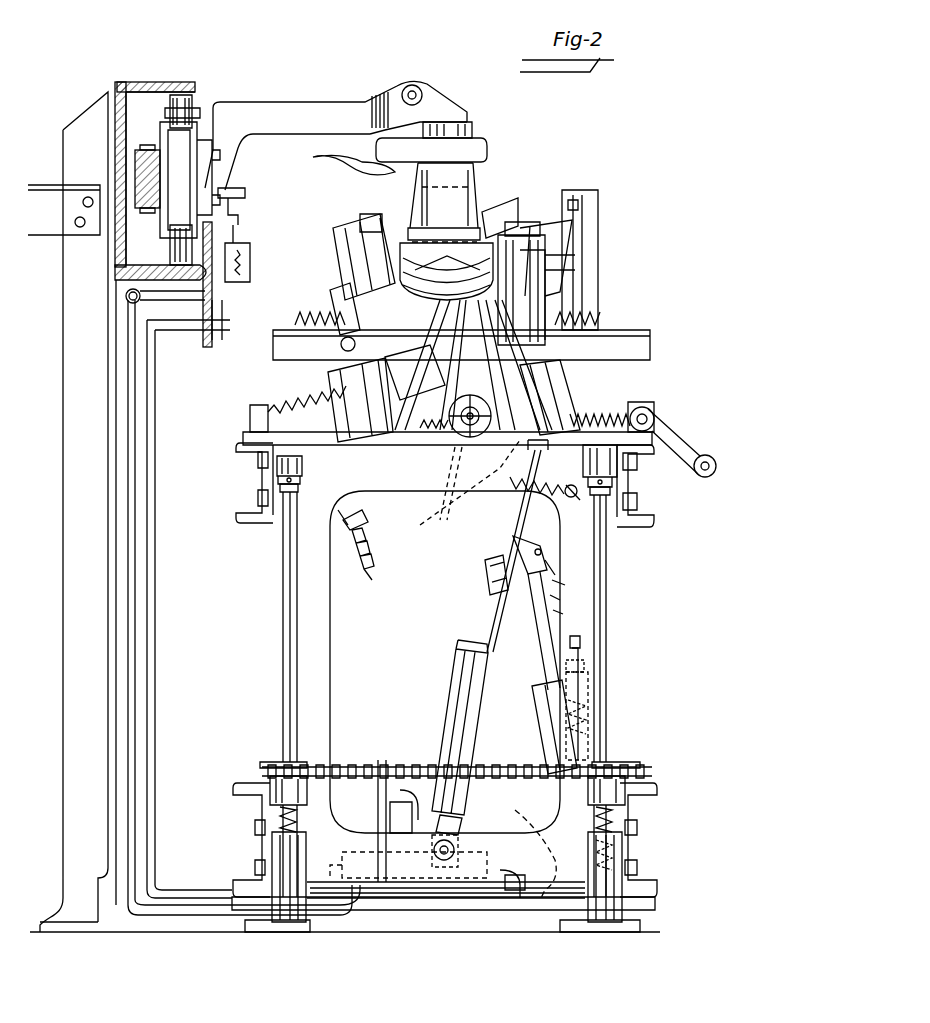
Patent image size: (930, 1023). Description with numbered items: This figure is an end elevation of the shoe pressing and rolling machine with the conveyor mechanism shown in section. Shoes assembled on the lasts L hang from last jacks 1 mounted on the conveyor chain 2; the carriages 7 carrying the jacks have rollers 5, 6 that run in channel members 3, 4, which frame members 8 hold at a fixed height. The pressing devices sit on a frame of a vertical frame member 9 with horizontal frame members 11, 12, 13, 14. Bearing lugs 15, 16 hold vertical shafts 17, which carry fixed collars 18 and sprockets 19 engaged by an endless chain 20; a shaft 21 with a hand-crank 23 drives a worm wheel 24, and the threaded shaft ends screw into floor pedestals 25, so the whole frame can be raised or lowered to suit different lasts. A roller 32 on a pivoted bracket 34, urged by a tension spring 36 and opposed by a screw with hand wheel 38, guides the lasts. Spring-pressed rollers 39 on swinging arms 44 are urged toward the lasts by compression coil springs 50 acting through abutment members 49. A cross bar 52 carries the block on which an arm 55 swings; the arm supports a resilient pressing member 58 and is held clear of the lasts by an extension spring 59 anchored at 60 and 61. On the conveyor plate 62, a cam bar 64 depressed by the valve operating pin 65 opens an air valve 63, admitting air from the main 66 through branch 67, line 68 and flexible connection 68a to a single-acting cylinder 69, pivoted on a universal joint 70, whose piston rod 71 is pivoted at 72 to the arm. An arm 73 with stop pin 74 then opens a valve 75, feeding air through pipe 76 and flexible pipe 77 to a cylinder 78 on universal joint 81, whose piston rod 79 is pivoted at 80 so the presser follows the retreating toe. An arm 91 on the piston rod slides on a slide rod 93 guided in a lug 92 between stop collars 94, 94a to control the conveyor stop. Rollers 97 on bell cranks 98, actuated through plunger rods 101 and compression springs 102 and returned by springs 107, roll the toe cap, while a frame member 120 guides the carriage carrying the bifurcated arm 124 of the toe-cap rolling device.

The last jack 1 is at (296, 102).
The conveyor chain 2 is at (135, 170).
The channel member 3 is at (190, 95).
The channel member 4 is at (178, 262).
The roller 5 is at (197, 112).
The roller 6 is at (168, 240).
The carriage 7 is at (178, 215).
The frame member 8 is at (75, 318).
The vertical frame member 9 is at (585, 630).
The horizontal frame member 11 is at (270, 472).
The horizontal frame member 12 is at (630, 490).
The horizontal frame member 13 is at (262, 840).
The horizontal frame member 14 is at (622, 836).
The bearing lug 15 is at (304, 472).
The bearing lug 16 is at (270, 790).
The vertical shaft 17 is at (290, 615).
The fixed collar 18 is at (300, 480).
The sprocket 19 is at (265, 764).
The endless chain 20 is at (358, 764).
The shaft 21 is at (668, 426).
The hand-crank 23 is at (712, 460).
The worm wheel 24 is at (645, 408).
The pedestal 25 is at (285, 845).
The roller 32 is at (547, 282).
The bracket 34 is at (482, 366).
The tension spring 36 is at (428, 440).
The hand wheel 38 is at (463, 440).
The spring-pressed roller 39 is at (388, 230).
The swinging arm 44 is at (350, 368).
The abutment member 49 is at (250, 425).
The compression coil spring 50 is at (275, 384).
The cross bar 52 is at (440, 892).
The arm 55 is at (468, 634).
The resilient pressing member 58 is at (562, 268).
The extension spring 59 is at (505, 520).
The anchor point 60 is at (572, 497).
The anchor point 61 is at (500, 490).
The plate 62 is at (212, 345).
The air valve 63 is at (248, 275).
The depressible cam bar 64 is at (240, 206).
The valve operating pin 65 is at (232, 190).
The air pressure main 66 is at (125, 296).
The branch 67 is at (188, 300).
The line 68 is at (160, 430).
The flexible connection 68a is at (540, 836).
The single-acting cylinder 69 is at (548, 728).
The universal joint 70 is at (606, 850).
The piston rod 71 is at (545, 645).
The pivot 72 is at (520, 544).
The arm 73 is at (390, 814).
The stop pin 74 is at (360, 852).
The valve 75 is at (388, 898).
The pipe 76 is at (135, 665).
The flexible pipe 77 is at (400, 792).
The cylinder 78 is at (455, 710).
The piston rod 79 is at (478, 600).
The pivot 80 is at (486, 566).
The universal joint 81 is at (458, 855).
The arm 91 is at (600, 656).
The lug 92 is at (600, 708).
The slide rod 93 is at (628, 692).
The stop collar 94 is at (582, 640).
The stop collar 94a is at (600, 672).
The roller 97 is at (340, 236).
The bell crank 98 is at (335, 310).
The plunger rod 101 is at (366, 566).
The compression spring 102 is at (362, 534).
The spring 107 is at (320, 315).
The frame member 120 is at (560, 250).
The bifurcated arm 124 is at (565, 197).
The last L is at (480, 200).